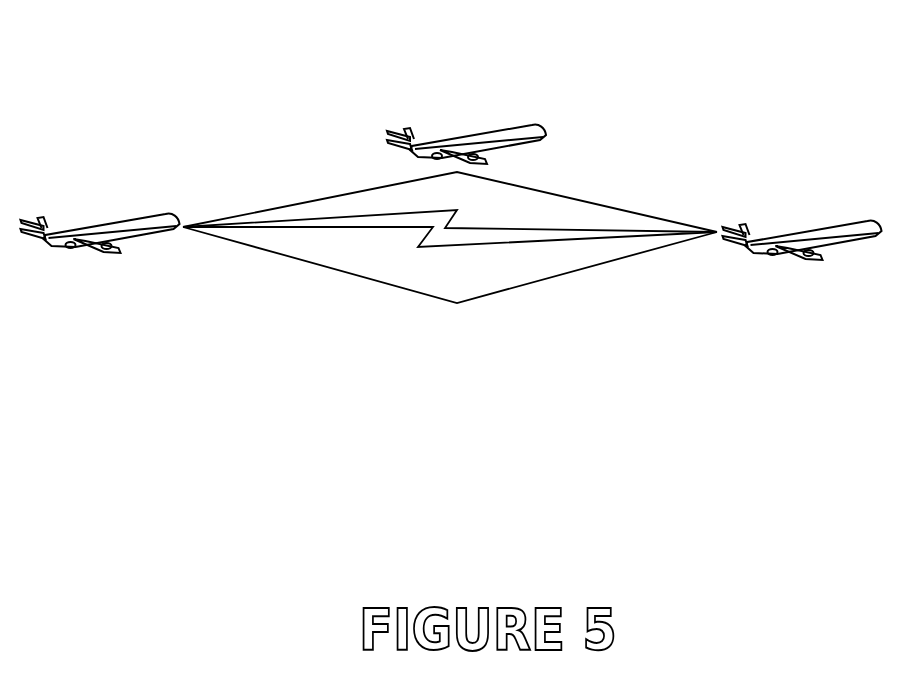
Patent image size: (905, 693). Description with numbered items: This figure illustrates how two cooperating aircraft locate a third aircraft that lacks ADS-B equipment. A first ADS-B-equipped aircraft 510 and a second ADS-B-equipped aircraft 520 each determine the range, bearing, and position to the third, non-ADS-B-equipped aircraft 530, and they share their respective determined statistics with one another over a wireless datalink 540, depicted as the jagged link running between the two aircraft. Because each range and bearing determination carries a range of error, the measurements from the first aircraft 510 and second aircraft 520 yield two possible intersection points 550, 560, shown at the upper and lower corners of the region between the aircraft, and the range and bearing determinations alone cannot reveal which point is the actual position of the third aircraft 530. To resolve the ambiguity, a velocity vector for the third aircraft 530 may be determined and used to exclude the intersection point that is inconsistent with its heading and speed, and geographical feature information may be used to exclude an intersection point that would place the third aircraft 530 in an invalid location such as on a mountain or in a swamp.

The first ADS-B-equipped aircraft 510 is at (85, 250).
The second ADS-B-equipped aircraft 520 is at (785, 256).
The third, non-ADS-B-equipped aircraft 530 is at (480, 132).
The wireless datalink 540 is at (601, 239).
The intersection point 550 is at (490, 179).
The intersection point 560 is at (404, 289).